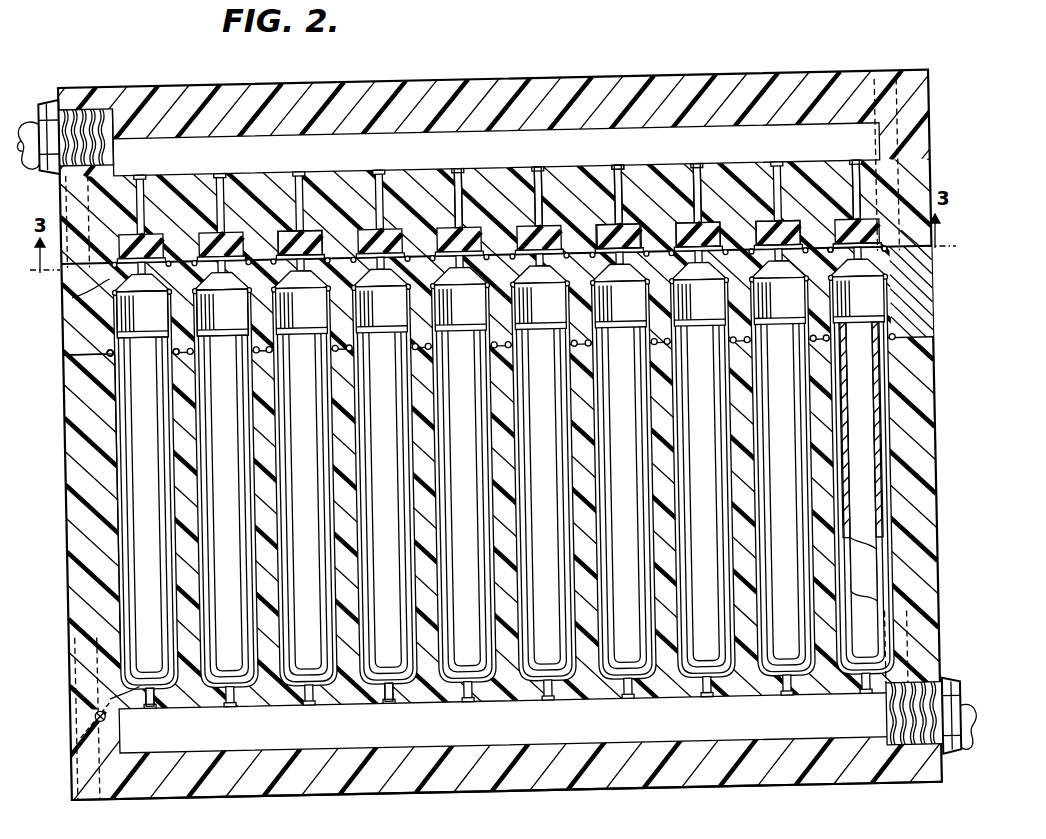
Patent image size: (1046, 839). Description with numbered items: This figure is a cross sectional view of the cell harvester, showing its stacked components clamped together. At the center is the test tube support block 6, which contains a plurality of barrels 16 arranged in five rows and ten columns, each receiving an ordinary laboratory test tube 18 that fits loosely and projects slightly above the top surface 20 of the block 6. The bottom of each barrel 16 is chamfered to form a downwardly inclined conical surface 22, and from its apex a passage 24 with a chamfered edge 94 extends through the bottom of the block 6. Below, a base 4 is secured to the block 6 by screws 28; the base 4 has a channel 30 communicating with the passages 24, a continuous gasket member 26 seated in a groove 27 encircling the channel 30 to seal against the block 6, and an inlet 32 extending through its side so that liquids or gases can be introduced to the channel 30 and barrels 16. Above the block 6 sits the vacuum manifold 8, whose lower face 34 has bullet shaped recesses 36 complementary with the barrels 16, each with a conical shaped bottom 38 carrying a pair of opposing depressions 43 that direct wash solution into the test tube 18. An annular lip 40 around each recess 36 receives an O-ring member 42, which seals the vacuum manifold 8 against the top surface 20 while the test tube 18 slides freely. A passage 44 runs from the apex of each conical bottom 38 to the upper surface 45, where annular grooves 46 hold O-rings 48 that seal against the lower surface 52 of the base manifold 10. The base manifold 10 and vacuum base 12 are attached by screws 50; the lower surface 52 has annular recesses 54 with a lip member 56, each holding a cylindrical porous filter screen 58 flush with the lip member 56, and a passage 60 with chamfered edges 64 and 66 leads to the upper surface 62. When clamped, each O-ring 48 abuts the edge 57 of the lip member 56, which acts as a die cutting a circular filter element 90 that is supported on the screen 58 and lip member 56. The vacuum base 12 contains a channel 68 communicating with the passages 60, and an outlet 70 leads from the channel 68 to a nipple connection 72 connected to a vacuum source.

The base 4 is at (73, 793).
The test tube support block 6 is at (67, 515).
The vacuum manifold 8 is at (932, 336).
The base manifold 10 is at (88, 230).
The vacuum base 12 is at (96, 98).
The barrels 16 is at (100, 466).
The test tubes 18 is at (131, 474).
The top surface 20 is at (68, 400).
The conical surface 22 is at (140, 702).
The passage 24 is at (150, 710).
The gasket member 26 is at (95, 719).
The groove 27 is at (48, 769).
The screws 28 is at (100, 805).
The channel 30 is at (280, 736).
The inlet 32 is at (948, 780).
The lower face 34 is at (72, 358).
The recesses 36 is at (138, 329).
The conical shaped bottom 38 is at (292, 288).
The lip 40 is at (100, 352).
The O-ring member 42 is at (110, 356).
The depressions 43 is at (368, 288).
The passage 44 is at (452, 288).
The upper surface 45 is at (100, 290).
The annular grooves 46 is at (920, 252).
The O-rings 48 is at (906, 262).
The screws 50 is at (912, 75).
The lower surface 52 is at (918, 238).
The annular recesses 54 is at (760, 245).
The lip member 56 is at (800, 245).
The edge 57 is at (804, 254).
The porous filter screen 58 is at (708, 235).
The passage 60 is at (452, 180).
The upper surface 62 is at (640, 182).
The chamfered edge 64 is at (612, 182).
The chamfered edge 66 is at (538, 232).
The channel 68 is at (352, 162).
The outlet 70 is at (115, 110).
The nipple connection 72 is at (36, 106).
The filter element 90 is at (312, 246).
The chamfered edge 94 is at (390, 706).